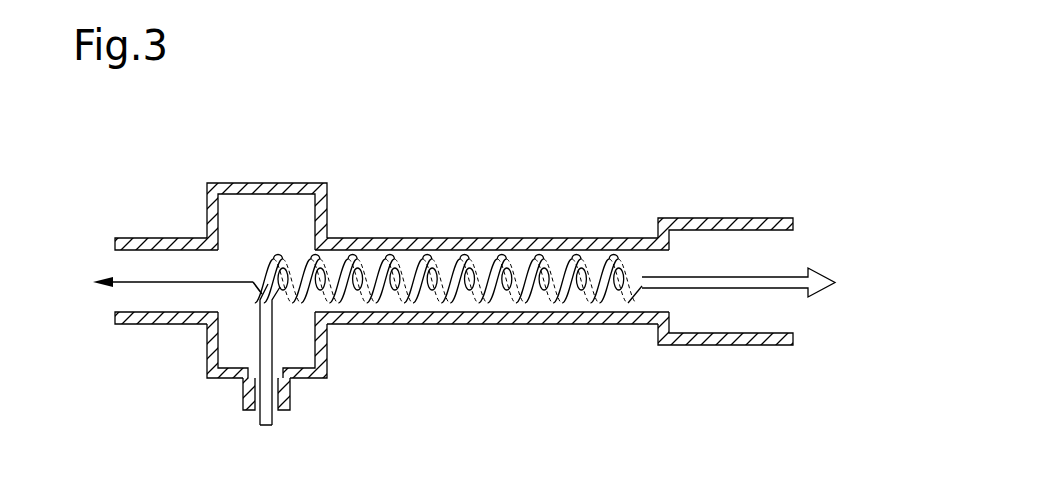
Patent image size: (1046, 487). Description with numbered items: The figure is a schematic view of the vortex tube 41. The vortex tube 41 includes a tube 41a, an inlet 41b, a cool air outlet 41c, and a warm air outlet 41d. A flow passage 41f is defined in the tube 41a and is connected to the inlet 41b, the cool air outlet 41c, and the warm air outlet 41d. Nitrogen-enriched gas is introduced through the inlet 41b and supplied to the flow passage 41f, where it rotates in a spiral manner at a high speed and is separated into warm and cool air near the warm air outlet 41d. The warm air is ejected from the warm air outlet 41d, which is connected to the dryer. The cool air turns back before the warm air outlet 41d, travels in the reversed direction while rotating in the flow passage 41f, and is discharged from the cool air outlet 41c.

The vortex tube 41 is at (258, 182).
The tube 41a is at (443, 238).
The inlet 41b is at (292, 399).
The cool air outlet 41c is at (114, 250).
The warm air outlet 41d is at (797, 232).
The flow passage 41f is at (571, 305).